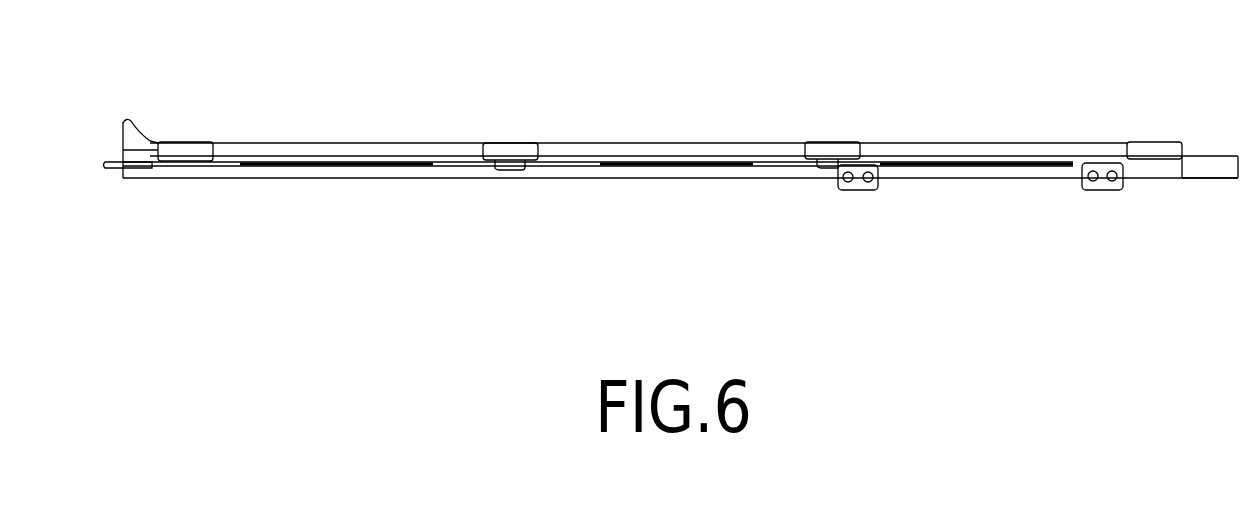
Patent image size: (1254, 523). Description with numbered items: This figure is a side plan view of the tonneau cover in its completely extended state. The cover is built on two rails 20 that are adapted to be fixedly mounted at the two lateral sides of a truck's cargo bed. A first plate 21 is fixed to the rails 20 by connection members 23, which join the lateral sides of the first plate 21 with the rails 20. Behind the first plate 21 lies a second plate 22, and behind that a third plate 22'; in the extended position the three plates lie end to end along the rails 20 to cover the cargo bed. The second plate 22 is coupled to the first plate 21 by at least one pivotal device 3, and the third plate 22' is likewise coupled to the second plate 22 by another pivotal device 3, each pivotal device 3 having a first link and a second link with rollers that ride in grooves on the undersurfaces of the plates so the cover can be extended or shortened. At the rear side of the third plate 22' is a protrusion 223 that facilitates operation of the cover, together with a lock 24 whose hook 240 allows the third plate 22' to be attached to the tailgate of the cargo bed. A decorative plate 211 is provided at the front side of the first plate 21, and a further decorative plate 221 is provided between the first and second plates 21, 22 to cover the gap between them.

The rail 20 is at (600, 170).
The first plate 21 is at (985, 143).
The second plate 22 is at (666, 97).
The third plate 22' is at (346, 89).
The decorative plate 221 is at (513, 143).
The decorative plate 211 is at (1143, 142).
The protrusion 223 is at (123, 122).
The lock 24 is at (155, 142).
The hook 240 is at (115, 168).
The connection member 23 is at (858, 190).
The pivotal device 3 is at (503, 178).